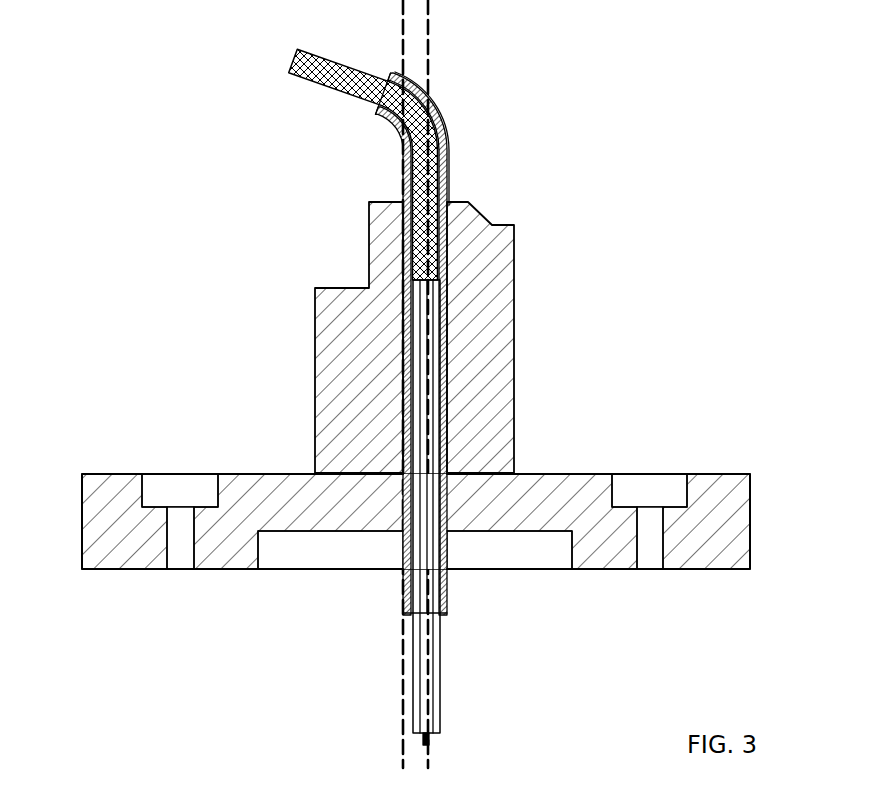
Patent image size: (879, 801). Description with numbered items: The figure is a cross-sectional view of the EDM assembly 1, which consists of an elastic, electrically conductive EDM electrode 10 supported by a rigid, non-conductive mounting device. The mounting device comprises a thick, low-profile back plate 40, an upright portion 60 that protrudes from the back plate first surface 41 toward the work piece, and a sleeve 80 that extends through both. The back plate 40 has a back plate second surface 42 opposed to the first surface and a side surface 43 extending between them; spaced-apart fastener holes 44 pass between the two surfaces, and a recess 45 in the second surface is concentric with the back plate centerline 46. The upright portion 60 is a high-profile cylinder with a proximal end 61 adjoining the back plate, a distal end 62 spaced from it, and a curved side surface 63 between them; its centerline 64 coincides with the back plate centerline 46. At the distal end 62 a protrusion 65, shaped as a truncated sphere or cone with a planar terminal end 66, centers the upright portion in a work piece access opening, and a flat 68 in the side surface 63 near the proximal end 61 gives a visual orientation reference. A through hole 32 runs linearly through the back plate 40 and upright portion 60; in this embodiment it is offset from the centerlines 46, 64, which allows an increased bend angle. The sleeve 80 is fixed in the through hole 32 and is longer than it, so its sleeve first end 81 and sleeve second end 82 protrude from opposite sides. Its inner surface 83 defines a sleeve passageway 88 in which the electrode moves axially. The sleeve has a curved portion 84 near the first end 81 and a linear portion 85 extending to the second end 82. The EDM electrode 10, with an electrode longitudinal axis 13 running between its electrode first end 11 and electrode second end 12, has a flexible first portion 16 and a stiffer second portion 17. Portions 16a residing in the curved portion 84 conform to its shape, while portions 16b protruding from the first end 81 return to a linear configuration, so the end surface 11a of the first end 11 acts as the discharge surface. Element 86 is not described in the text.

The EDM assembly 1 is at (60, 82).
The EDM electrode 10 is at (340, 60).
The electrode first end 11 is at (296, 52).
The end surface 11a is at (289, 63).
The electrode second end 12 is at (441, 733).
The electrode longitudinal axis 13 is at (430, 32).
The first portion 16 is at (436, 248).
The portions of the electrode first portion residing in the curved portion 16a is at (447, 116).
The portions of the electrode first portion protruding from the sleeve first end 16b is at (389, 73).
The second portion 17 is at (441, 690).
The through hole 32 is at (432, 305).
The back plate 40 is at (586, 488).
The back plate first surface 41 is at (716, 477).
The back plate second surface 42 is at (704, 571).
The side surface 43 is at (752, 522).
The fastener holes 44 is at (188, 571).
The recess 45 is at (262, 565).
The back plate centerline 46 is at (408, 656).
The upright portion 60 is at (516, 348).
The proximal end 61 is at (312, 471).
The distal end 62 is at (516, 227).
The curved side surface 63 is at (314, 387).
The upright portion centerline 64 is at (408, 656).
The protrusion 65 is at (481, 214).
The planar terminal end 66 is at (386, 203).
The flat 68 is at (368, 246).
The sleeve 80 is at (450, 167).
The sleeve first end 81 is at (388, 110).
The sleeve second end 82 is at (441, 623).
The inner surface 83 is at (441, 592).
The curved portion 84 is at (437, 104).
The linear portion 85 is at (442, 437).
The protective layer 86 is at (437, 104).
The sleeve passageway 88 is at (434, 395).